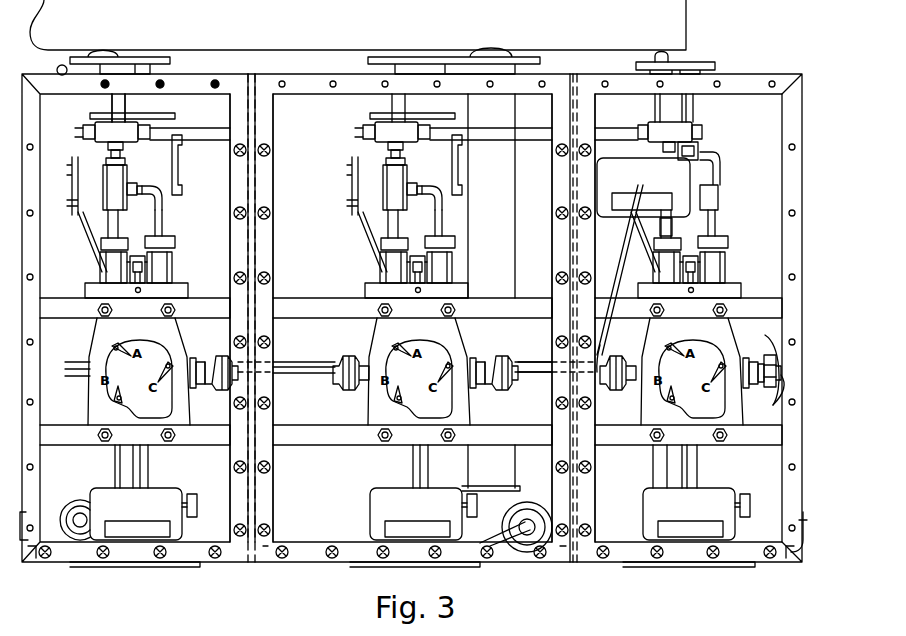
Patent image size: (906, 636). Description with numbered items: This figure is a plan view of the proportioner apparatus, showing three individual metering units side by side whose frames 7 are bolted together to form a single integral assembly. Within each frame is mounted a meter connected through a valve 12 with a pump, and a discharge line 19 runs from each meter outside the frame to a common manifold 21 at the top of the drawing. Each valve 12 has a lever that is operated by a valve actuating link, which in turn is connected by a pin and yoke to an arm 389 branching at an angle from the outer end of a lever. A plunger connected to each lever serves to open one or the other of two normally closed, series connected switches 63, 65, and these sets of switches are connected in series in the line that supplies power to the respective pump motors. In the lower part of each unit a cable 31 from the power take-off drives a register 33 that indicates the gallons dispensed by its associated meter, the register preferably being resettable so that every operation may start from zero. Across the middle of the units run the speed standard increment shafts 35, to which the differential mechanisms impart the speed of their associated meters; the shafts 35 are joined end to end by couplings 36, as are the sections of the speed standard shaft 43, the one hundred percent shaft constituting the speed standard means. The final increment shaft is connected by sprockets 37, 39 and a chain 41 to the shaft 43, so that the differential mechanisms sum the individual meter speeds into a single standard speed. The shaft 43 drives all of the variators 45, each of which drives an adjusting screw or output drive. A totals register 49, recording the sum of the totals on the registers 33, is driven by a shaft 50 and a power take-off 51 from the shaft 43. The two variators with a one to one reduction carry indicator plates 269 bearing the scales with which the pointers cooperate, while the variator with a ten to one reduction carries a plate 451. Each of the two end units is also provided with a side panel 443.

The frame 7 is at (33, 332).
The valve 12 is at (165, 170).
The discharge line 19 is at (96, 122).
The manifold 21 is at (672, 30).
The cable 31 is at (136, 461).
The register 33 is at (165, 497).
The speed standard increment shaft 35 is at (207, 384).
The coupling 36 is at (345, 380).
The sprocket 37 is at (775, 405).
The sprocket 39 is at (765, 358).
The chain 41 is at (768, 388).
The speed standard shaft 43 is at (295, 363).
The variator 45 is at (175, 343).
The totals register 49 is at (627, 150).
The shaft 50 is at (609, 275).
The power take-off 51 is at (611, 351).
The switch 63 is at (110, 270).
The switch 65 is at (160, 270).
The indicator plate 269 is at (108, 378).
The arm 389 is at (84, 248).
The side panel 443 is at (25, 512).
The plate 451 is at (683, 340).